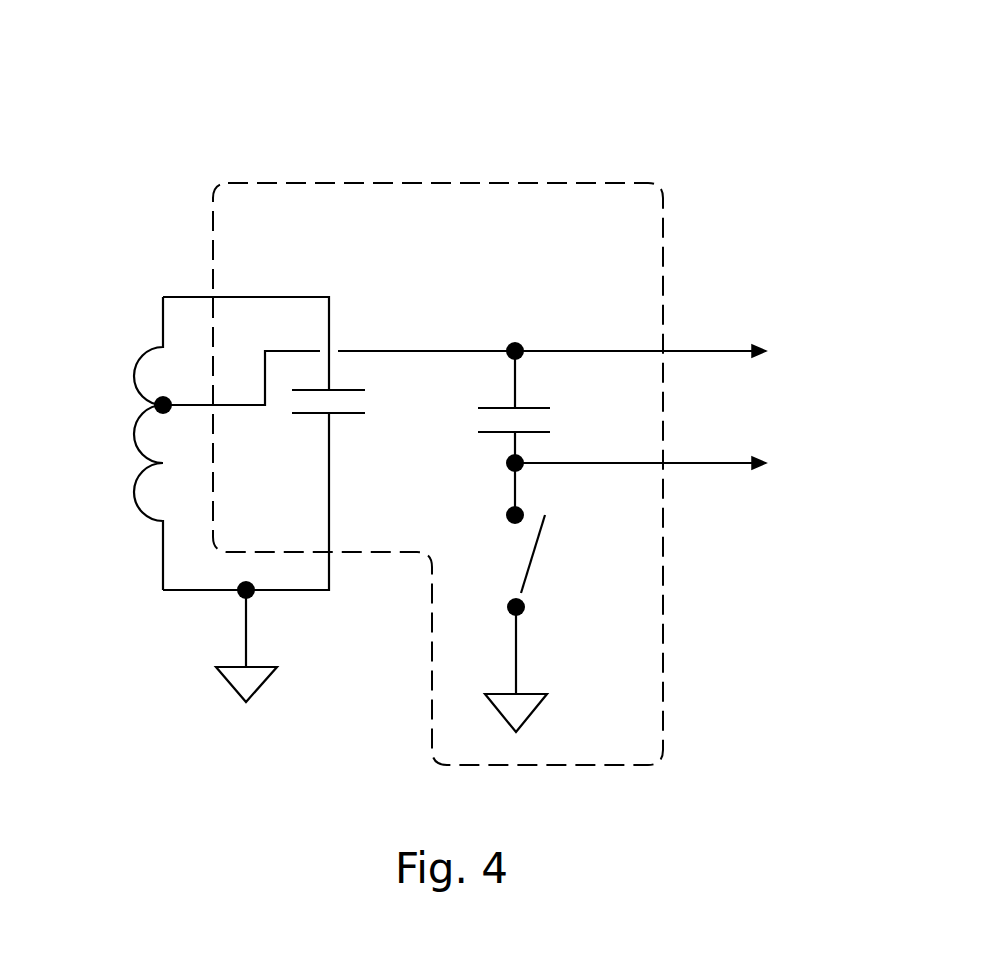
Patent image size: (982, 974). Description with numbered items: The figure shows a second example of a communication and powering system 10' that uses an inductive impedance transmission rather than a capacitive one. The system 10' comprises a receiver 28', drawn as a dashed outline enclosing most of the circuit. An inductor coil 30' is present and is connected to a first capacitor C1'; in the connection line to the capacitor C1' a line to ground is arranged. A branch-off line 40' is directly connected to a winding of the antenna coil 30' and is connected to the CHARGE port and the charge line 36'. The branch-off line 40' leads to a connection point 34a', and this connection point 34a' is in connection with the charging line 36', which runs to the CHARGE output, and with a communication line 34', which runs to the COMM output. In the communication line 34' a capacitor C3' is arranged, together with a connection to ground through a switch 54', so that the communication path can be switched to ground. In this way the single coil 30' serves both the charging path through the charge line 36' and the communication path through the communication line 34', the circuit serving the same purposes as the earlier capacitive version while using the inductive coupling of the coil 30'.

The communication and powering system 10' is at (457, 388).
The receiver 28' is at (438, 388).
The inductor coil 30' is at (102, 443).
The connection point 34a' is at (533, 299).
The branch-off line 40' is at (635, 294).
The charge line 36' is at (811, 305).
The communication line 34' is at (680, 514).
The switch 54' is at (571, 539).
The first capacitor C1' is at (376, 417).
The capacitor C3' is at (557, 407).